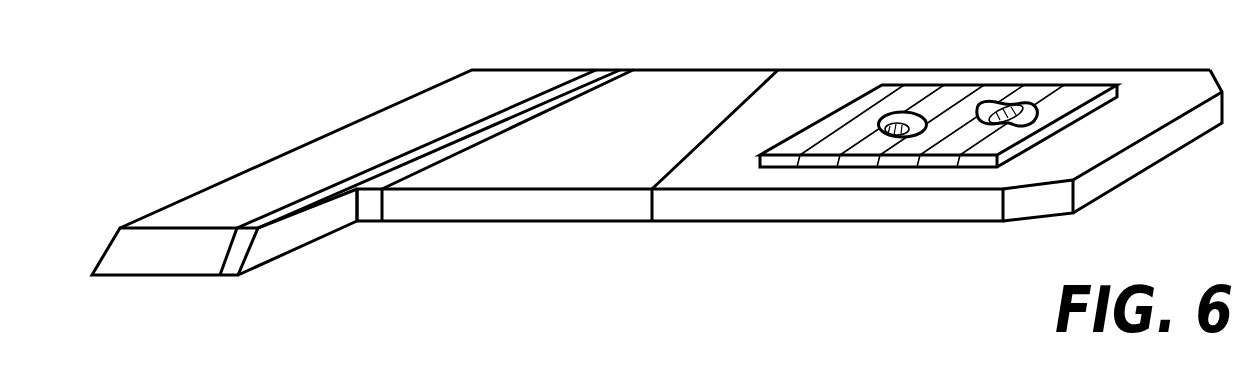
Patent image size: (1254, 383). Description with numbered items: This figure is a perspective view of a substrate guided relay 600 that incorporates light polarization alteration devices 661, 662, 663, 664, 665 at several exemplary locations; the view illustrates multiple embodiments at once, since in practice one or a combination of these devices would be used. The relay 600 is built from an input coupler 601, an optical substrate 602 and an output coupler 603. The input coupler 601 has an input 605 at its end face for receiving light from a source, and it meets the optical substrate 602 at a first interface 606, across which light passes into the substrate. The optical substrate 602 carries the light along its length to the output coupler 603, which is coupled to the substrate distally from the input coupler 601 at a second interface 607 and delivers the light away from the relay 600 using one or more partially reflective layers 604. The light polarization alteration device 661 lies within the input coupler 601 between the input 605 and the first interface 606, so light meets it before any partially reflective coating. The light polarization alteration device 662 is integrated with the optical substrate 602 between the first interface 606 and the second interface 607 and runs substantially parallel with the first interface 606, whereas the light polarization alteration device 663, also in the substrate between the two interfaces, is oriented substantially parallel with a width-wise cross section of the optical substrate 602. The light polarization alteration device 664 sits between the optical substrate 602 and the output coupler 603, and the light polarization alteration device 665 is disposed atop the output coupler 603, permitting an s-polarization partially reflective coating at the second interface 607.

The substrate guided relay 600 is at (190, 157).
The input coupler 601 is at (355, 138).
The optical substrate 602 is at (510, 203).
The output coupler 603 is at (799, 132).
The partially reflective layers 604 is at (826, 130).
The input 605 is at (135, 257).
The first interface 606 is at (357, 222).
The second interface 607 is at (1073, 127).
The light polarization alteration device 661 is at (328, 187).
The light polarization alteration device 662 is at (633, 73).
The light polarization alteration device 663 is at (665, 175).
The light polarization alteration device 664 is at (905, 110).
The light polarization alteration device 665 is at (1008, 100).